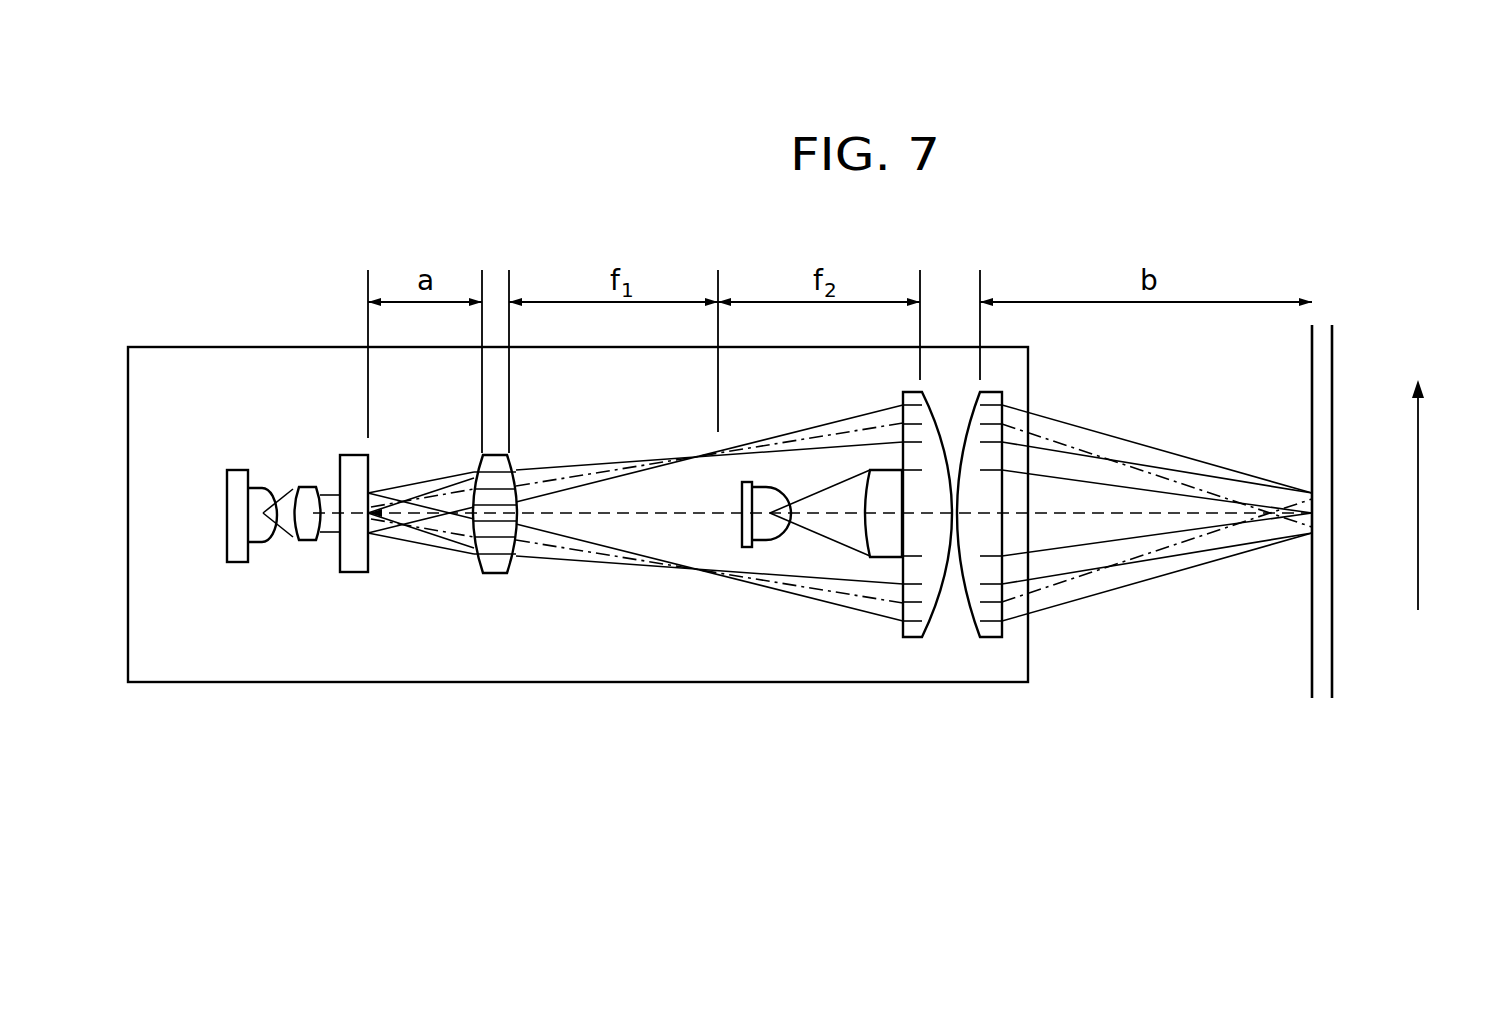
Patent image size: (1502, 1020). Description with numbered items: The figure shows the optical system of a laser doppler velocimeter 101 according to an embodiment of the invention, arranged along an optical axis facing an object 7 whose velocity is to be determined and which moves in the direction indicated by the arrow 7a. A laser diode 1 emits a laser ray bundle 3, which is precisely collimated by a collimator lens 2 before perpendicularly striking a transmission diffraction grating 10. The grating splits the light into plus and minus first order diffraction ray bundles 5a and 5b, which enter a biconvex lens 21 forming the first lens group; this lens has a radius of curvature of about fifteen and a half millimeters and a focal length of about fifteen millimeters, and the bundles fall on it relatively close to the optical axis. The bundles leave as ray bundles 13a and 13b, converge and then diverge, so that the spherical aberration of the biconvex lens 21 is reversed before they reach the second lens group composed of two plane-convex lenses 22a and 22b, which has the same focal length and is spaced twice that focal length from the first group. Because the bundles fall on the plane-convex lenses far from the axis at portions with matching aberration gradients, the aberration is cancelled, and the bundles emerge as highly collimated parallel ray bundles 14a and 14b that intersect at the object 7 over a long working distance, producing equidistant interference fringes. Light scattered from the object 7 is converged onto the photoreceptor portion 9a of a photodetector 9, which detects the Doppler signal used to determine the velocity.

The laser diode 1 is at (260, 537).
The collimator lens 2 is at (305, 487).
The laser ray bundle 3 is at (327, 528).
The ray bundle 5a is at (425, 485).
The ray bundle 5b is at (425, 547).
The object 7 is at (1334, 680).
The moving direction of scale 7a is at (1419, 497).
The photodetector 9 is at (770, 542).
The light receiving lens 9a is at (770, 505).
The diffraction grating 10 is at (353, 572).
The ray bundle 13a is at (577, 468).
The ray bundle 13b is at (567, 560).
The parallel ray bundle 14a is at (1122, 440).
The parallel ray bundle 14b is at (1127, 583).
The biconvex lens 21 is at (493, 573).
The plane-convex lens 22a is at (912, 640).
The plane-convex lens 22b is at (995, 640).
The laser doppler velocimeter 101 is at (216, 358).